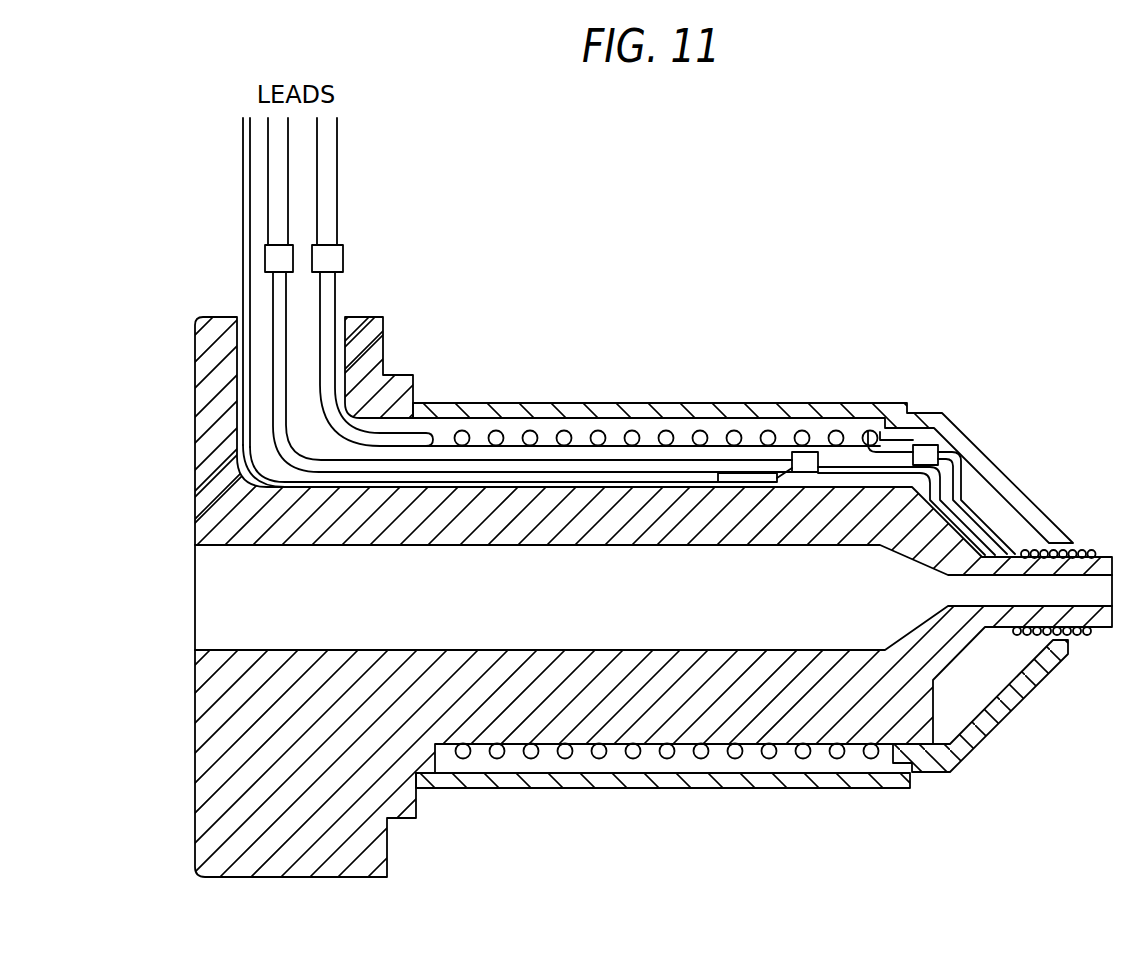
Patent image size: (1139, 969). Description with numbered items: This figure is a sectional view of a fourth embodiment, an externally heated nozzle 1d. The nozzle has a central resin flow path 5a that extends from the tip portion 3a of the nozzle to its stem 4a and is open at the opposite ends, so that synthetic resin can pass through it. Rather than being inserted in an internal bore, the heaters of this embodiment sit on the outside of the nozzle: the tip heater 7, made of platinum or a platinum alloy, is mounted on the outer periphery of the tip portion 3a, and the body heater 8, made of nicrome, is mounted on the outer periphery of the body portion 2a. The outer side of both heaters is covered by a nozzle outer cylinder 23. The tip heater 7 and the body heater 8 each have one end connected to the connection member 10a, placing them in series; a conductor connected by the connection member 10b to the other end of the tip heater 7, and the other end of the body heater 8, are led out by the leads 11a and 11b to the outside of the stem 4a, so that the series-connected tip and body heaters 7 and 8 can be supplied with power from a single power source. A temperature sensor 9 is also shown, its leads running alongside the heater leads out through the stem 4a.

The nozzle 1d is at (733, 395).
The body portion 2a is at (480, 725).
The tip portion 3a is at (1072, 637).
The stem 4a is at (199, 490).
The central resin flow path 5a is at (793, 613).
The tip heater 7 is at (1081, 547).
The body heater 8 is at (510, 425).
The temperature sensor 9 is at (782, 465).
The connection member 10a is at (928, 446).
The temperature sensor terminal 10b is at (808, 454).
The lead 11a is at (272, 307).
The lead 11b is at (335, 292).
The nozzle outer cylinder 23 is at (596, 790).